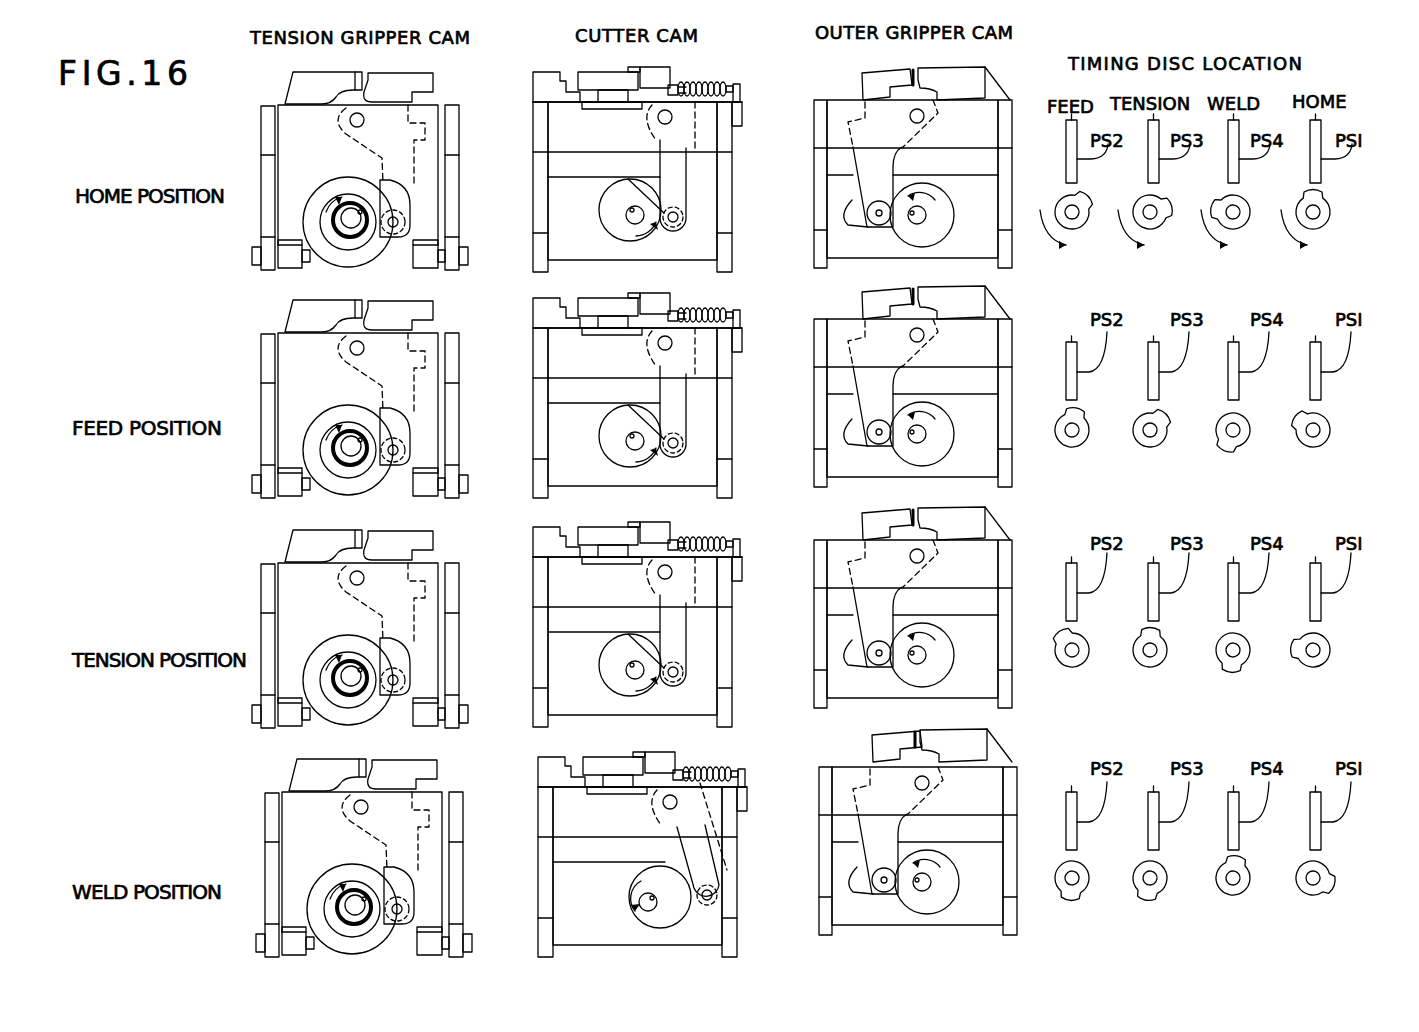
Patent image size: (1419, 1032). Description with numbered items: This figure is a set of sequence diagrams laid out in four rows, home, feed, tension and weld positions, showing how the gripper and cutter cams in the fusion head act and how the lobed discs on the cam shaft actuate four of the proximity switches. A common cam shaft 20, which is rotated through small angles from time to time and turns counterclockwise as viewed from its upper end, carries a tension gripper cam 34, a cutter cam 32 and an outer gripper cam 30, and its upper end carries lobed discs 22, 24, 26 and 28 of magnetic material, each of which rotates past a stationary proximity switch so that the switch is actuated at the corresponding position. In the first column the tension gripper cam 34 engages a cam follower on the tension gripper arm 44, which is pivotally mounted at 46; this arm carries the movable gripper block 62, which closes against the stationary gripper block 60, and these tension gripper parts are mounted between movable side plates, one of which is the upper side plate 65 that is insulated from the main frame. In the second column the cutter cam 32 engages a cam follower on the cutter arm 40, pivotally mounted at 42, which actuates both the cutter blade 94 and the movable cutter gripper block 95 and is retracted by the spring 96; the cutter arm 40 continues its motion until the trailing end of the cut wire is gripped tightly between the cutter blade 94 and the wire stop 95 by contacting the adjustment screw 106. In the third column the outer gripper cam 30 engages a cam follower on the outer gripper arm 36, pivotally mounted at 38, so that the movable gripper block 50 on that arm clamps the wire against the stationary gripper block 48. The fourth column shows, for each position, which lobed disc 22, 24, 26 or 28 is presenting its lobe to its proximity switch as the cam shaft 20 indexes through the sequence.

The cam shaft 20 is at (350, 228).
The lobed disc 22 is at (1328, 220).
The lobed disc 24 is at (1087, 220).
The lobed disc 26 is at (1165, 220).
The lobed disc 28 is at (1248, 220).
The outer gripper cam 30 is at (950, 214).
The cutter cam 32 is at (613, 230).
The tension gripper cam 34 is at (372, 238).
The outer gripper arm 36 is at (867, 557).
The pivot of outer gripper arm 38 is at (925, 118).
The cutter arm 40 is at (690, 80).
The pivot of cutter arm 42 is at (656, 120).
The tension gripper arm 44 is at (405, 204).
The pivot of tension gripper arm 46 is at (345, 130).
The stationary gripper block 48 is at (985, 78).
The movable gripper block 50 is at (870, 73).
The stationary gripper block 60 is at (300, 82).
The movable gripper block 62 is at (430, 81).
The upper side plate 65 is at (430, 168).
The cutter blade 94 is at (656, 72).
The movable cutter gripper block 95 is at (593, 72).
The spring 96 is at (736, 86).
The adjustment screw 106 is at (559, 72).